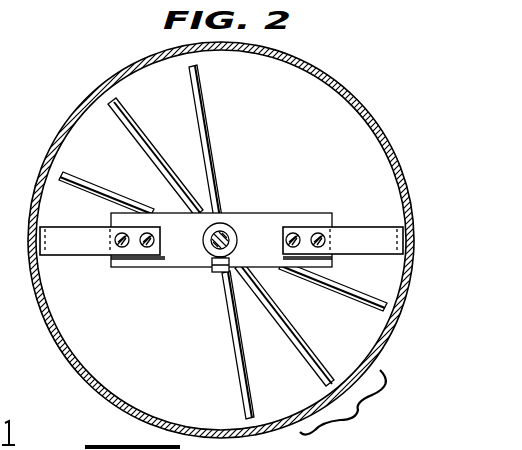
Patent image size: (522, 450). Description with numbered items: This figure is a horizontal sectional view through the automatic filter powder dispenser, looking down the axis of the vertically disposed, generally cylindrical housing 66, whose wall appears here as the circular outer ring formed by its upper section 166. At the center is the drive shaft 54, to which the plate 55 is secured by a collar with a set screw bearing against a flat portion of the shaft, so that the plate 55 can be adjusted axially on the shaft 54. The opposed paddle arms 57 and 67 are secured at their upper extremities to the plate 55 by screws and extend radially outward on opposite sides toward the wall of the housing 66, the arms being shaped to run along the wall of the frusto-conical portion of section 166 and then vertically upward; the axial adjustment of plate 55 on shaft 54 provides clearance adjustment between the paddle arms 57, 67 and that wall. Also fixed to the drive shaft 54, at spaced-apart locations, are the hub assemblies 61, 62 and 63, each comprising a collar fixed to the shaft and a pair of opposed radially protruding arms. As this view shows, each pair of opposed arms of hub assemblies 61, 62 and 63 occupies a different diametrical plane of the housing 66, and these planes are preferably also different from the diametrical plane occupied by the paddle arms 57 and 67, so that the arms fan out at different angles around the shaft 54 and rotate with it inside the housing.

The drive shaft 54 is at (226, 232).
The plate 55 is at (177, 256).
The paddle arm 57 is at (84, 244).
The hub assembly 61 is at (122, 188).
The hub assembly 62 is at (162, 152).
The hub assembly 63 is at (212, 126).
The housing 66 is at (343, 409).
The paddle arm 67 is at (365, 238).
The upper section 166 is at (372, 124).